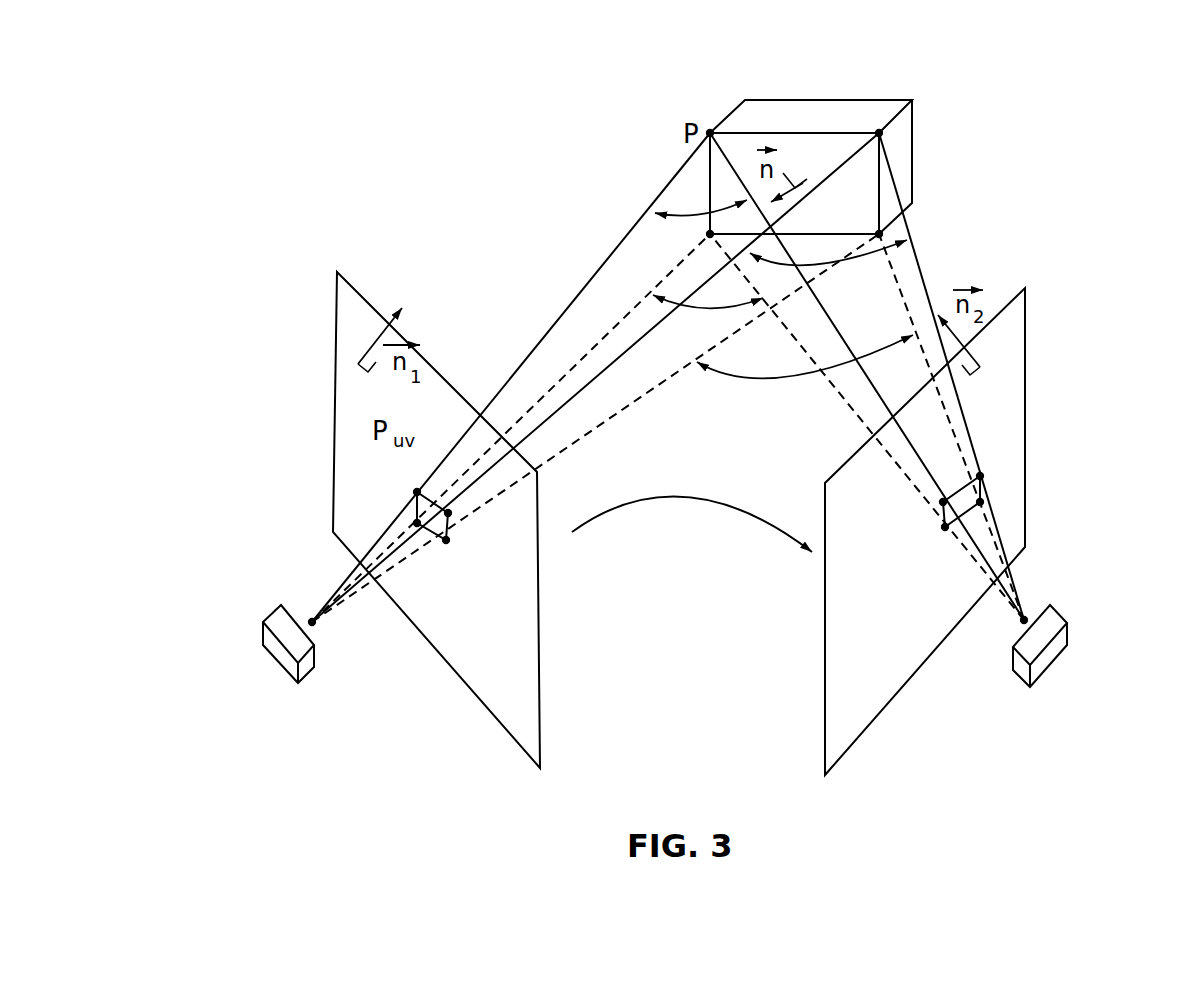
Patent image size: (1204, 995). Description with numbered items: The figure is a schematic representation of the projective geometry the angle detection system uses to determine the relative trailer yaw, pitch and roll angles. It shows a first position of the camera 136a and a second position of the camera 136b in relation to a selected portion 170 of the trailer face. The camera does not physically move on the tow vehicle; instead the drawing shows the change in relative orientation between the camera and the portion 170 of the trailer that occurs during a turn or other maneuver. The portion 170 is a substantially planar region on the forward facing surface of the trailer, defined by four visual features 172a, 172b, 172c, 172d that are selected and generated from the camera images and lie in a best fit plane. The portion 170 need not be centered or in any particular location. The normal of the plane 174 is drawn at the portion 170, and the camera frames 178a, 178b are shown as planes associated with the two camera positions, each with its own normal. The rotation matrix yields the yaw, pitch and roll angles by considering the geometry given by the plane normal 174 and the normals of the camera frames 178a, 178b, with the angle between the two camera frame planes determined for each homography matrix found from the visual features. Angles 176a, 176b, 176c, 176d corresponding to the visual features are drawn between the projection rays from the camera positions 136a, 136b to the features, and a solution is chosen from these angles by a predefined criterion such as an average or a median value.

The portion of the trailer face 170 is at (860, 187).
The visual feature 172a is at (710, 235).
The visual feature 172b is at (879, 234).
The visual feature 172c is at (710, 133).
The visual feature 172d is at (879, 133).
The normal of the plane 174 is at (394, 304).
The angle 176a is at (707, 308).
The angle 176b is at (767, 378).
The angle 176c is at (676, 214).
The angle 176d is at (851, 265).
The camera frame 178a is at (517, 618).
The camera frame 178b is at (1017, 460).
The first position of the camera 136a is at (278, 655).
The second position of the camera 136b is at (1058, 650).